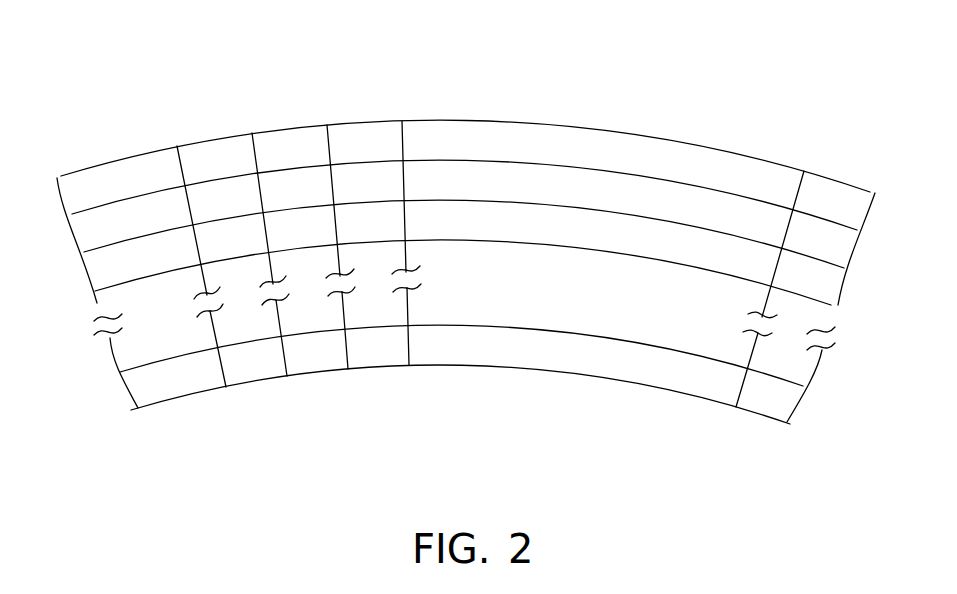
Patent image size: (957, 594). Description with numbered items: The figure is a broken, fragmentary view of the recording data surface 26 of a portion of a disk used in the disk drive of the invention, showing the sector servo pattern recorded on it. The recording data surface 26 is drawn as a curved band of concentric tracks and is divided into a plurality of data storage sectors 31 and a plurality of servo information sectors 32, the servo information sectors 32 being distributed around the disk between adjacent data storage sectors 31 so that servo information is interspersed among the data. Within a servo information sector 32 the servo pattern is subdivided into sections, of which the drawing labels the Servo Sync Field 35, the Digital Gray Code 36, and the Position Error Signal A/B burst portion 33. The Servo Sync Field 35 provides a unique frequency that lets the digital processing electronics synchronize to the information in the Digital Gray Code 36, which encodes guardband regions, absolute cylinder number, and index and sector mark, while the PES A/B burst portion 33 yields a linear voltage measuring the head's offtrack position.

The recording data surface 26 is at (624, 143).
The data storage sectors 31 is at (732, 412).
The servo information sectors 32 is at (412, 375).
The Position Error Signal (PES) A/B burst portion 33 is at (400, 110).
The Servo Sync Field 35 is at (248, 123).
The Digital Gray Code 36 is at (325, 113).